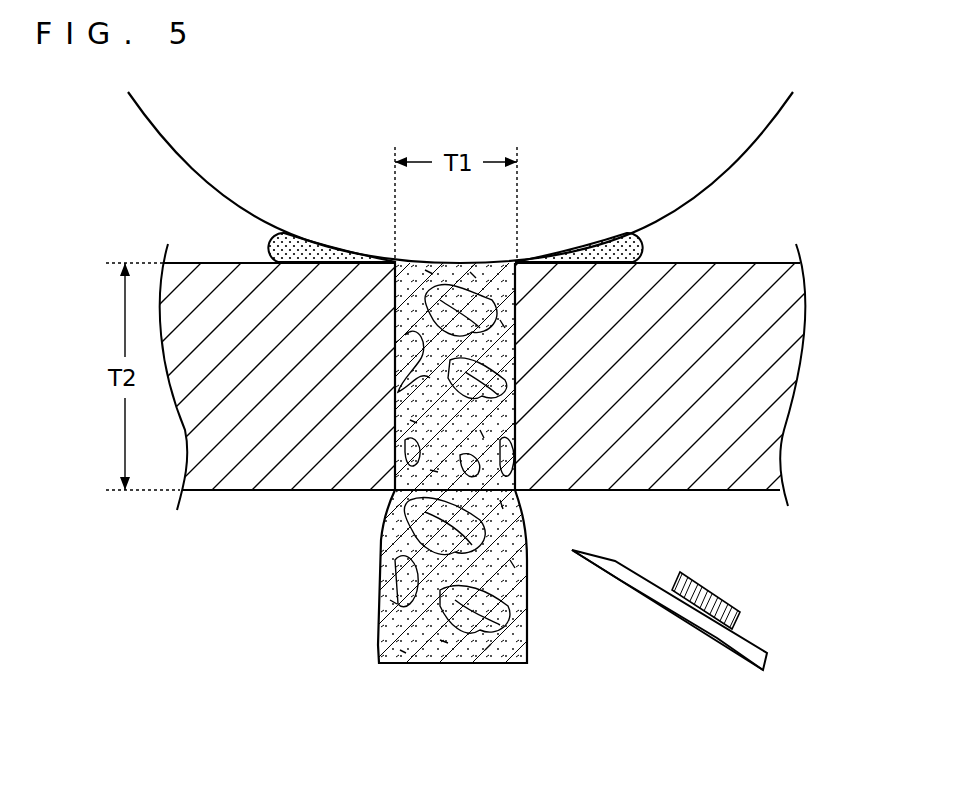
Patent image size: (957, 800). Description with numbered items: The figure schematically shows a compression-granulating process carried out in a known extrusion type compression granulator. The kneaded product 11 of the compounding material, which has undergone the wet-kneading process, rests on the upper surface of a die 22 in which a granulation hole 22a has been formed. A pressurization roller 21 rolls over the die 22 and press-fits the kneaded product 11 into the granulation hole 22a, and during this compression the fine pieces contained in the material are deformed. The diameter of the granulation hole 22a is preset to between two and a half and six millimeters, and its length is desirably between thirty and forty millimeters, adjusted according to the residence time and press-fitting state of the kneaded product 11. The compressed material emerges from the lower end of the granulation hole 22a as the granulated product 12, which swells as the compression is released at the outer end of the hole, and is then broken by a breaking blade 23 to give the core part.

The pressurization roller 21 is at (744, 108).
The kneaded product 11 is at (626, 247).
The die 22 is at (745, 412).
The granulation hole 22a is at (518, 493).
The granulated product 12 is at (390, 600).
The breaking blade 23 is at (768, 653).